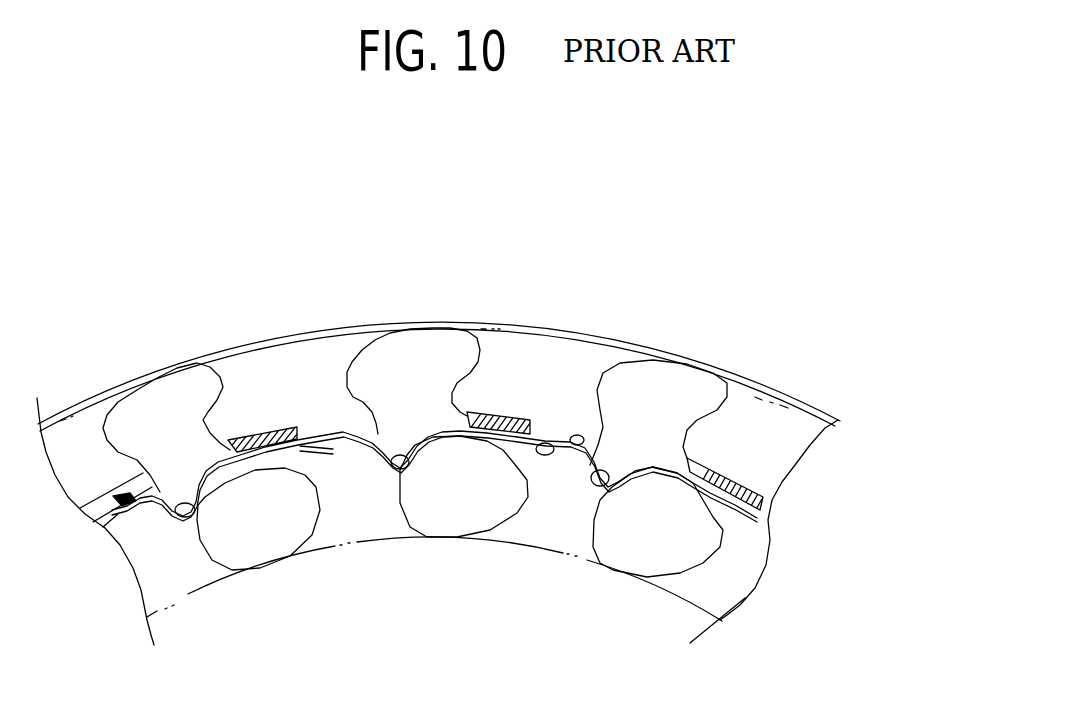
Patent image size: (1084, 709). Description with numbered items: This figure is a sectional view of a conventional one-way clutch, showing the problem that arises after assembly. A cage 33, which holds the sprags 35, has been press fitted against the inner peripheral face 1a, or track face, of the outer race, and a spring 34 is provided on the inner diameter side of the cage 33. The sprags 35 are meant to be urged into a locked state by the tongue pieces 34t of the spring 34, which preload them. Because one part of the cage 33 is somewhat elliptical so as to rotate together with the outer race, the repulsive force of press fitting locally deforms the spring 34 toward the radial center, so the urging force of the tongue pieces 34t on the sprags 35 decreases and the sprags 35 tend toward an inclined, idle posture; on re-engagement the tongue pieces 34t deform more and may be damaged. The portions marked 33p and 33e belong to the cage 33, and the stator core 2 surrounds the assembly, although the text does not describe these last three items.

The inner peripheral face 1a is at (780, 418).
The stator core 2 is at (703, 610).
The cage 33 is at (265, 428).
The insulator protruding portion 33p is at (343, 428).
The insulator end portion 33e is at (507, 326).
The spring 34 is at (563, 447).
The tongue pieces 34t is at (390, 462).
The sprags 35 is at (257, 542).